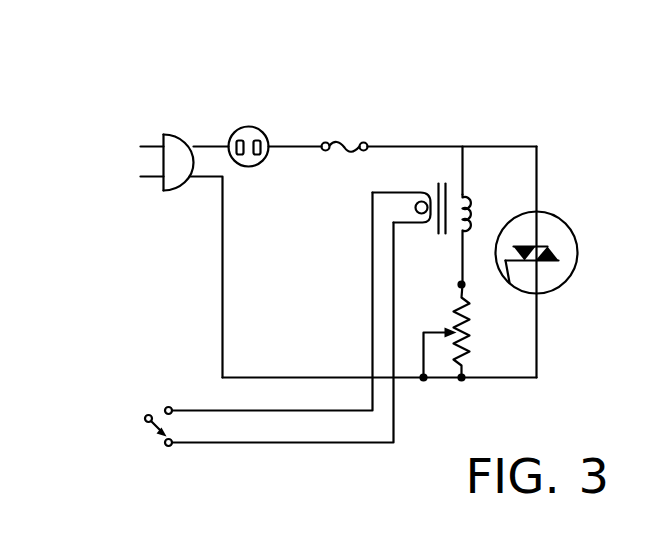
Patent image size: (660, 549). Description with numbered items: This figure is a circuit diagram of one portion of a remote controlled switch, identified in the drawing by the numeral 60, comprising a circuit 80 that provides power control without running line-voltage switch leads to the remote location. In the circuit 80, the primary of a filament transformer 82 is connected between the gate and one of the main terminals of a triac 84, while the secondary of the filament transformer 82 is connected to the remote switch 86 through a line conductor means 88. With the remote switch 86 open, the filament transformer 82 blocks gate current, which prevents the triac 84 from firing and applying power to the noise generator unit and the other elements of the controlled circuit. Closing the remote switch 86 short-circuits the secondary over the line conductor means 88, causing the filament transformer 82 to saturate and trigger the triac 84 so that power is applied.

The control circuit 60 is at (367, 83).
The circuit 80 is at (521, 84).
The filament transformer 82 is at (470, 179).
The triac 84 is at (583, 240).
The remote switch 86 is at (146, 460).
The line conductor means 88 is at (343, 420).